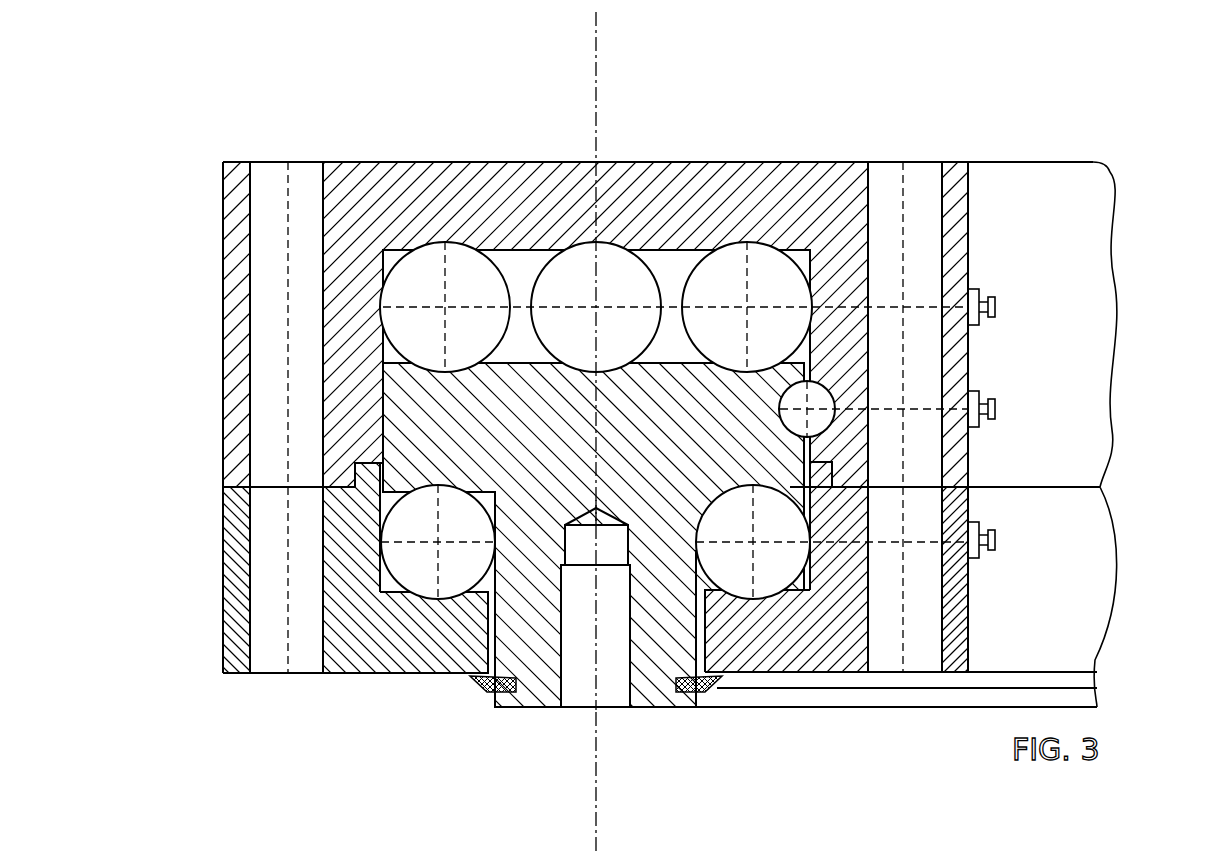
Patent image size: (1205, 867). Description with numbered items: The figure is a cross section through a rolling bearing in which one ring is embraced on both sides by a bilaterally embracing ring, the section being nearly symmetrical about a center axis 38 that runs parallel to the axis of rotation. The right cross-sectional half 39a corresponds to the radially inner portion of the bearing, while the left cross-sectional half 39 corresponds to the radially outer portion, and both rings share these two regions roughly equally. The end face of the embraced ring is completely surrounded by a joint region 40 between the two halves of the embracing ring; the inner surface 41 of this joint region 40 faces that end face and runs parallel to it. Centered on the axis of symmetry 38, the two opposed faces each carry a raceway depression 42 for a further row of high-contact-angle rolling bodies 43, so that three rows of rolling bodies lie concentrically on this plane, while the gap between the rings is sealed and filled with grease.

The center axis 38 is at (600, 35).
The left cross-sectional half 39 is at (393, 158).
The right cross-sectional half 39a is at (766, 156).
The joint region 40 is at (690, 250).
The inner surface 41 is at (682, 258).
The raceway depression 42 is at (586, 262).
The row of high-contact-angle rolling bodies 43 is at (632, 347).